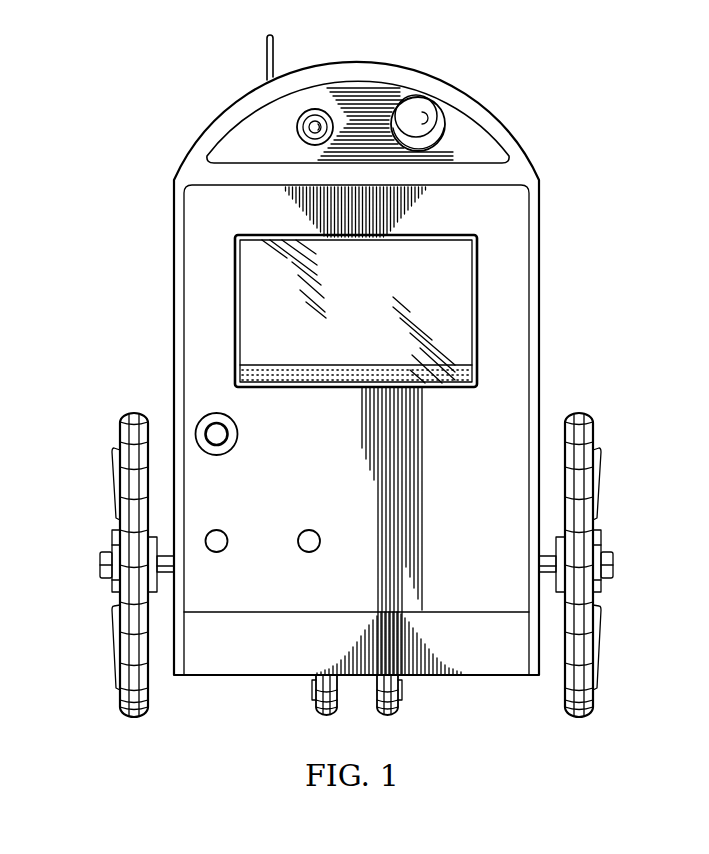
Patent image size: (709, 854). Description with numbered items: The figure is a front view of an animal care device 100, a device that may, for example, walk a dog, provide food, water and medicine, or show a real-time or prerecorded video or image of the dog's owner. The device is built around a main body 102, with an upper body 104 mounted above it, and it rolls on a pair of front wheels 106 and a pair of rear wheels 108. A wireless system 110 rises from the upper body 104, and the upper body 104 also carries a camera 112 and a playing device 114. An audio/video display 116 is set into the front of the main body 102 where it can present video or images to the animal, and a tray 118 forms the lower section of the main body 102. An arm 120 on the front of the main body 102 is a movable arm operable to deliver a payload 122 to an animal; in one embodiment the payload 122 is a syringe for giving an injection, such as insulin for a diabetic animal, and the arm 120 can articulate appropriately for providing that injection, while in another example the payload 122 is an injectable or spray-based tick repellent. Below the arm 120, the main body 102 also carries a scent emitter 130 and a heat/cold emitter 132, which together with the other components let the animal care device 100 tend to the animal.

The animal care device 100 is at (158, 86).
The main body 102 is at (541, 262).
The upper body 104 is at (494, 116).
The pair of front wheels 106 is at (118, 698).
The pair of rear wheels 108 is at (398, 716).
The wireless system 110 is at (266, 60).
The camera 112 is at (296, 127).
The playing device 114 is at (424, 96).
The audio/video display 116 is at (315, 234).
The tray 118 is at (445, 620).
The arm 120 is at (239, 437).
The payload 122 is at (220, 447).
The scent emitter 130 is at (224, 551).
The heat/cold emitter 132 is at (312, 551).